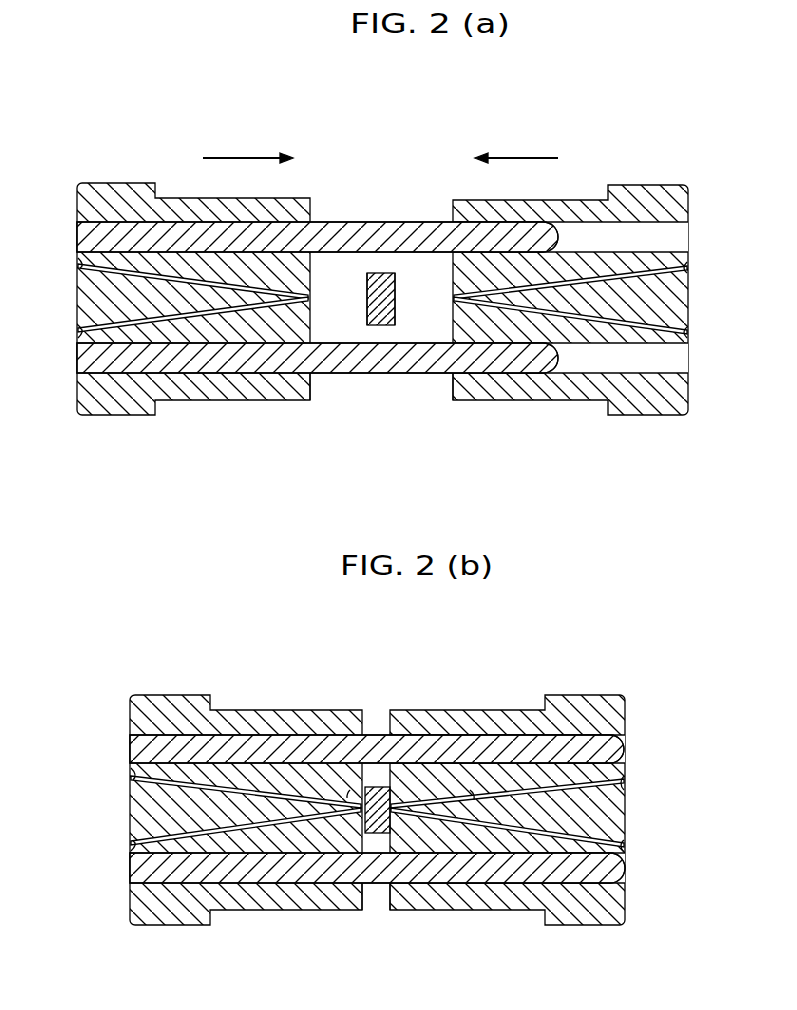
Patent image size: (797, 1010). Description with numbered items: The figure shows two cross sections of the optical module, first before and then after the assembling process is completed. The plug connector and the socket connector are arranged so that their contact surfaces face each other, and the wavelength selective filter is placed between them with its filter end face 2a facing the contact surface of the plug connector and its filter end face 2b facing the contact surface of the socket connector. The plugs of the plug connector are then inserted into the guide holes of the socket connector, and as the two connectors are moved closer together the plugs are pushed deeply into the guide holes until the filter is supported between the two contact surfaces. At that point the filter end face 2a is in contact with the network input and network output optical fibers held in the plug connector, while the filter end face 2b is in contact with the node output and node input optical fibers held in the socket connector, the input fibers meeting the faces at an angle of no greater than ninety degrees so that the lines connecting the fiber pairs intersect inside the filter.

The filter end face 2a is at (367, 304).
The filter end face 2b is at (395, 296).